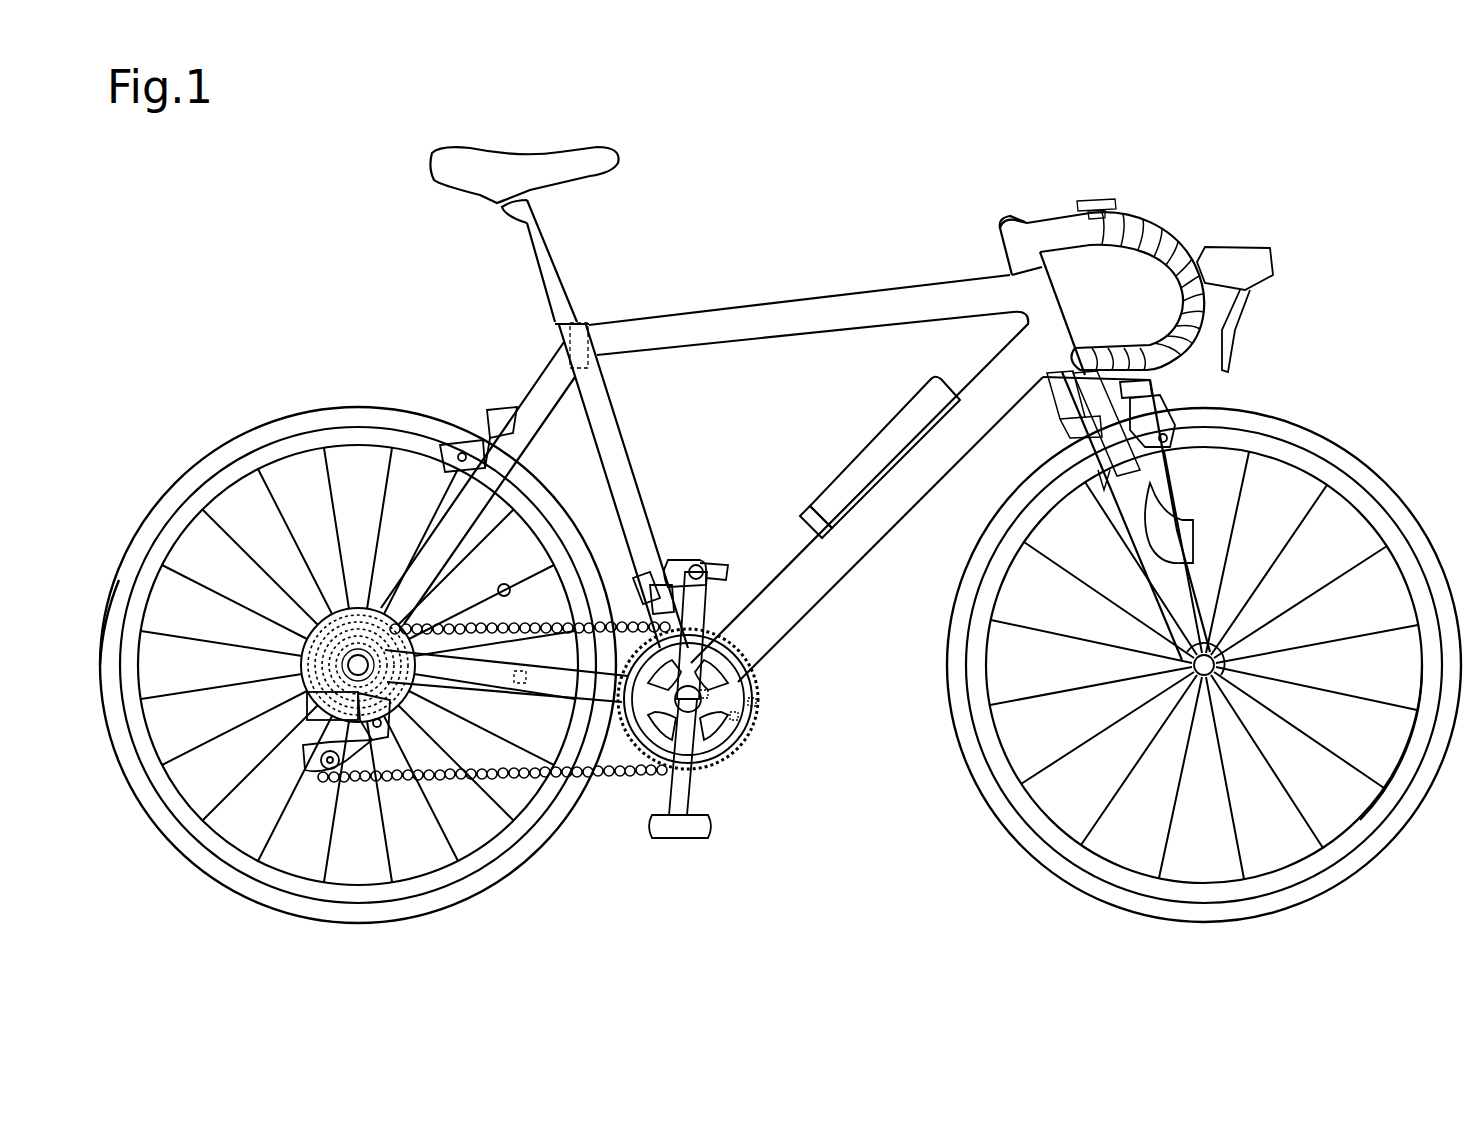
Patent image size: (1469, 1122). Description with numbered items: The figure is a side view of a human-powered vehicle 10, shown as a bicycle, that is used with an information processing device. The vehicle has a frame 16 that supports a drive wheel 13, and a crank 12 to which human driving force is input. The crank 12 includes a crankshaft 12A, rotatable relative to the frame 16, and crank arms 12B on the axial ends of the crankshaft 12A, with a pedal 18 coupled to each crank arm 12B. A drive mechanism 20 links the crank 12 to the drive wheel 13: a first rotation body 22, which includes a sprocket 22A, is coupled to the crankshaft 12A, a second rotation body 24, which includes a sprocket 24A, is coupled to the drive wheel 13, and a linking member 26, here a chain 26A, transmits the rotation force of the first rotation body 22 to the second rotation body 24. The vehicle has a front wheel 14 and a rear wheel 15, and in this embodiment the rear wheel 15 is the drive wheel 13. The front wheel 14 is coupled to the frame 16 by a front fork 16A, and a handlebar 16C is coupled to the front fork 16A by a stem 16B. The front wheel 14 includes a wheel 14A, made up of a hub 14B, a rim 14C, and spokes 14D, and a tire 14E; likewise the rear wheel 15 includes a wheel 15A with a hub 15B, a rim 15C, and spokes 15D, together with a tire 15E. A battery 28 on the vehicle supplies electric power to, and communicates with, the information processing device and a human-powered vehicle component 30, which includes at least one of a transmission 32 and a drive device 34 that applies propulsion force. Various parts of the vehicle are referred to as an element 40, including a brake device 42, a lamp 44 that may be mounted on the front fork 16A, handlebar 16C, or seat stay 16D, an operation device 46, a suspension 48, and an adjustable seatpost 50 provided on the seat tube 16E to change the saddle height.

The human-powered vehicle 10 is at (1160, 135).
The crank 12 is at (886, 789).
The crankshaft 12A is at (763, 732).
The crank arms 12B is at (706, 595).
The drive wheel 13 is at (143, 530).
The front wheel 14 is at (1288, 426).
The wheel 14A is at (1412, 570).
The hub 14B is at (1215, 683).
The rim 14C is at (1433, 667).
The spokes 14D is at (1404, 715).
The tire 14E is at (1425, 784).
The rear wheel 15 is at (347, 415).
The wheel 15A is at (178, 523).
The hub 15B is at (304, 667).
The rim 15C is at (142, 608).
The spokes 15D is at (249, 658).
The tire 15E is at (125, 759).
The frame 16 is at (874, 298).
The front fork 16A is at (1119, 507).
The stem 16B is at (1052, 232).
The handlebar 16C is at (1173, 242).
The seat stay 16D is at (547, 387).
The seat tube 16E is at (610, 424).
The pedal 18 is at (717, 558).
The drive mechanism 20 is at (575, 831).
The first rotation body 22 is at (613, 740).
The sprocket 22A is at (650, 747).
The second rotation body 24 is at (300, 610).
The sprocket 24A is at (330, 615).
The linking member 26 is at (453, 777).
The chain 26A is at (494, 781).
The battery 28 is at (878, 449).
The human-powered vehicle component 30 is at (345, 710).
The transmission 32 is at (346, 781).
The drive device 34 is at (800, 705).
The element 40 is at (1368, 253).
The brake device 42 is at (490, 412).
The lamp 44 is at (1198, 537).
The operation device 46 is at (1267, 260).
The suspension 48 is at (1102, 440).
The adjustable seatpost 50 is at (589, 348).